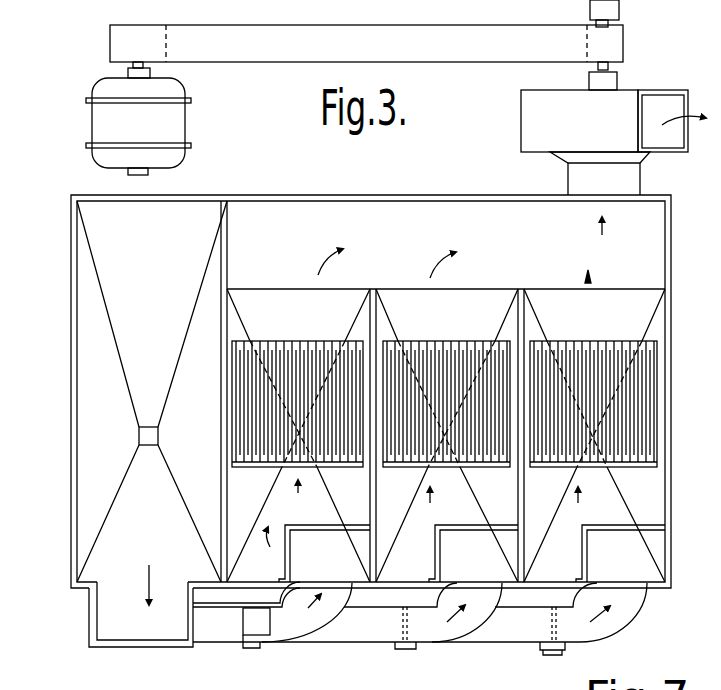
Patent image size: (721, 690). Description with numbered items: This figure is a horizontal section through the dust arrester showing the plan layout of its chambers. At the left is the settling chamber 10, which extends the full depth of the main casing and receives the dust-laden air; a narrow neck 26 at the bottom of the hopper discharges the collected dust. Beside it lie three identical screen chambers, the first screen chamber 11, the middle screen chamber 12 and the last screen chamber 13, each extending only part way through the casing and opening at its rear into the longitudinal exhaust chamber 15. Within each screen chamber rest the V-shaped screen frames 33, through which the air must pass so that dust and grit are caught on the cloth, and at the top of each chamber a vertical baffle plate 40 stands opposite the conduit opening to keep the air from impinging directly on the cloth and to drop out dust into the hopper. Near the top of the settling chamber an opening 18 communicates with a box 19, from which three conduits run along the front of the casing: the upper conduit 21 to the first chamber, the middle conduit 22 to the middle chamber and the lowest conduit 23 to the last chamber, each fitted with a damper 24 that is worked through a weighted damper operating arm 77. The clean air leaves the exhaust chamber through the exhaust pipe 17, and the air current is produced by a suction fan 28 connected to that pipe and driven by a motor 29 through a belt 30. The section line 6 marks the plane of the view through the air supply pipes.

The belt 30 is at (437, 32).
The motor 29 is at (177, 118).
The suction fan 28 is at (622, 108).
The exhaust pipe 17 is at (568, 174).
The exhaust chamber 15 is at (292, 233).
The settling chamber 10 is at (87, 407).
The narrow neck 26 is at (149, 427).
The opening 18 is at (120, 582).
The first screen chamber 11 is at (340, 308).
The middle screen chamber 12 is at (414, 315).
The last screen chamber 13 is at (657, 495).
The screen frame 33 is at (293, 350).
The vertical baffle plate 40 is at (314, 530).
The box 19 is at (122, 648).
The upper conduit 21 is at (202, 630).
The damper 24 is at (242, 628).
The section line 6— 6 is at (120, 619).
The middle conduit 22 is at (372, 630).
The lowest conduit 23 is at (502, 637).
The weighted damper operating arm 77 is at (546, 655).